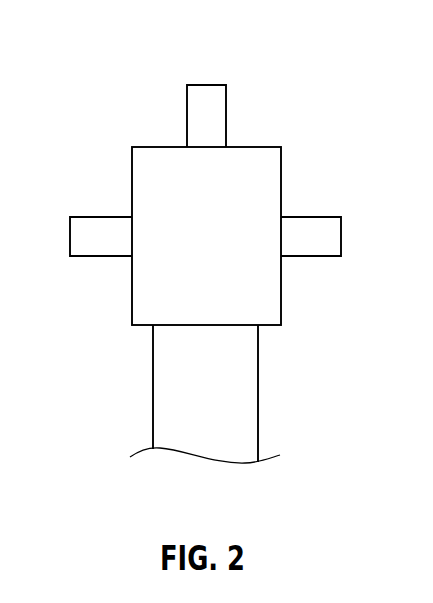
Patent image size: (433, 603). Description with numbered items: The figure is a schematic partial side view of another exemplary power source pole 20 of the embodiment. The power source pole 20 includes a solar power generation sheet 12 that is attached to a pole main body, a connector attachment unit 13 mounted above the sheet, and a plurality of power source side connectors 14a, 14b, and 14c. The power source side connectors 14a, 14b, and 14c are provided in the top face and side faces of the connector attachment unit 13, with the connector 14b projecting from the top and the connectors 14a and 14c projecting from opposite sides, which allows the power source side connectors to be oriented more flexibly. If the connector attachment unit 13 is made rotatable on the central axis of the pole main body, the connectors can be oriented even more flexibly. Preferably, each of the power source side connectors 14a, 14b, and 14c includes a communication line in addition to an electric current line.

The power source pole 20 is at (128, 100).
The solar power generation sheet 12 is at (243, 398).
The connector attachment unit 13 is at (140, 300).
The power source side connector 14a is at (318, 227).
The power source side connector 14b is at (215, 111).
The power source side connector 14c is at (93, 230).